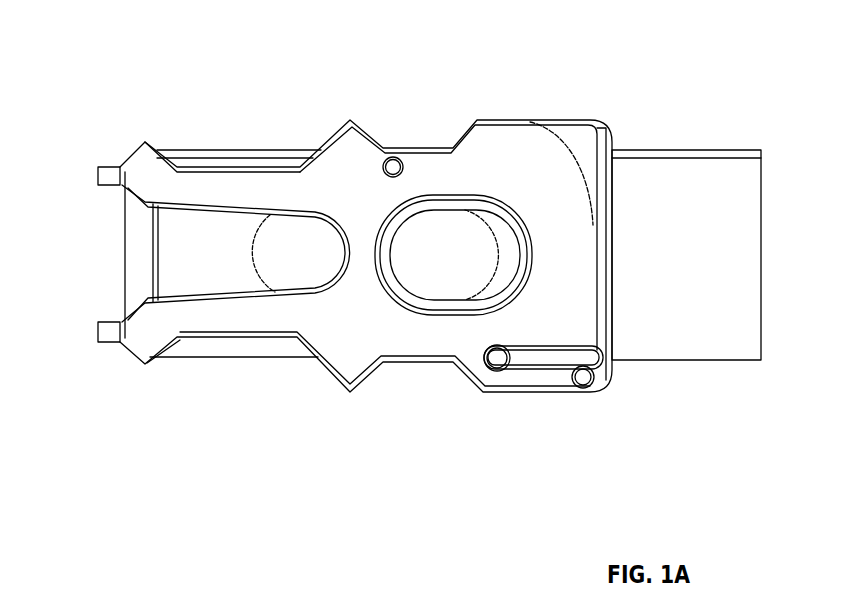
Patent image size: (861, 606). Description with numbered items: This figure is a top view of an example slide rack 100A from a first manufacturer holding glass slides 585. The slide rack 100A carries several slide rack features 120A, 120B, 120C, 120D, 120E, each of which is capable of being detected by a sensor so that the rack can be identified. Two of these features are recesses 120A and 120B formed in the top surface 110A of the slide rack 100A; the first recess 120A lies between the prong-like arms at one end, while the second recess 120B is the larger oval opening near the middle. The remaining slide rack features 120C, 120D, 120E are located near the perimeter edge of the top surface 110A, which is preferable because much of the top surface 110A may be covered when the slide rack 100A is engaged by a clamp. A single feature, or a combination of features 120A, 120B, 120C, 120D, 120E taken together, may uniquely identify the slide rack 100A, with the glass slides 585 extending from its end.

The slide rack 100A is at (138, 377).
The top surface 110A is at (338, 313).
The recess 120A is at (292, 252).
The recess 120B is at (431, 272).
The slide rack feature 120C is at (357, 120).
The slide rack feature 120D is at (530, 120).
The slide rack feature 120E is at (537, 387).
The glass slides 585 is at (685, 322).